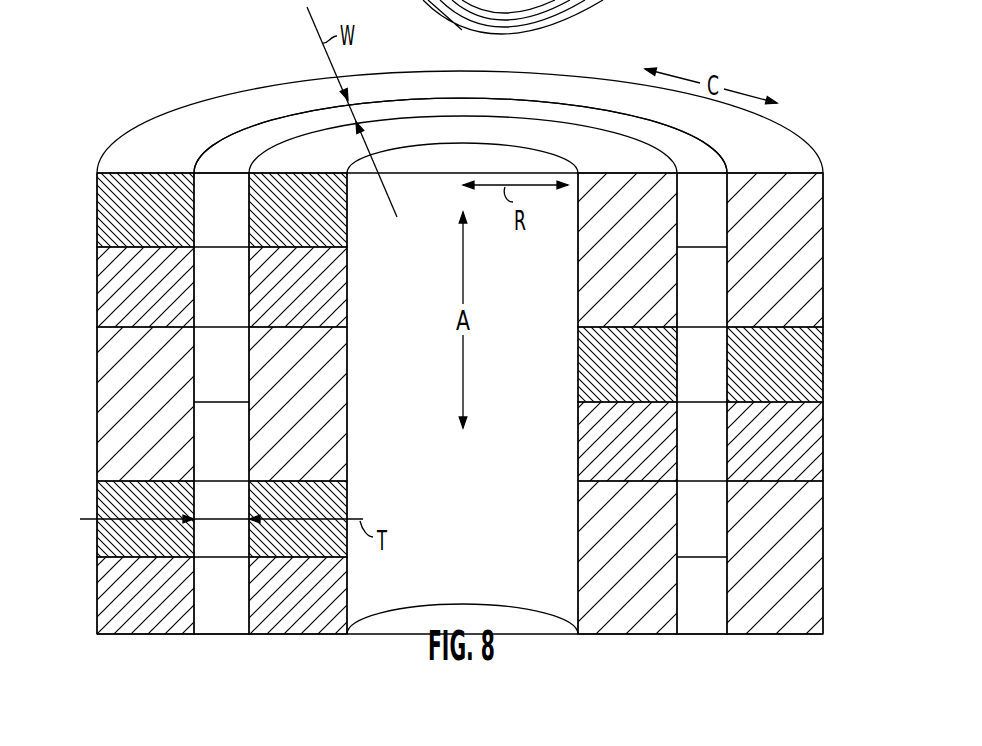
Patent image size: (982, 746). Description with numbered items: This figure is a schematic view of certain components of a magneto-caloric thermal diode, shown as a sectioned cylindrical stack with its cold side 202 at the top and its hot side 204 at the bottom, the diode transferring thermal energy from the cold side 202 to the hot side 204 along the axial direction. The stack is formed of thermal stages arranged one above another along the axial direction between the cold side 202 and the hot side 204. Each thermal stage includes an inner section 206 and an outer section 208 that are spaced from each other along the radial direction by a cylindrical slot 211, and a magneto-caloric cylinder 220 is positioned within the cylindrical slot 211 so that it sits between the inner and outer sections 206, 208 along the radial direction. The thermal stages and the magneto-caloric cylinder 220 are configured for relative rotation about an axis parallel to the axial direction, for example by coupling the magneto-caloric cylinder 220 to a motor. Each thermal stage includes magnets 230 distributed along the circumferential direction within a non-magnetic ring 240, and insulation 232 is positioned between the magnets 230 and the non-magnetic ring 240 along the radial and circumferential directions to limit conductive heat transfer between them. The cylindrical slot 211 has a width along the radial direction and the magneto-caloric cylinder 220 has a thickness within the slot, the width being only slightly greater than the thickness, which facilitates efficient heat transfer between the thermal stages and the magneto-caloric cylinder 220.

The cold side 202 is at (838, 169).
The hot side 204 is at (836, 630).
The inner section 206 is at (292, 642).
The outer section 208 is at (155, 642).
The cylindrical slot 211 is at (276, 113).
The magneto-caloric cylinder 220 is at (240, 147).
The magnets 230 is at (97, 290).
The insulation 232 is at (97, 212).
The non-magnetic ring 240 is at (97, 405).